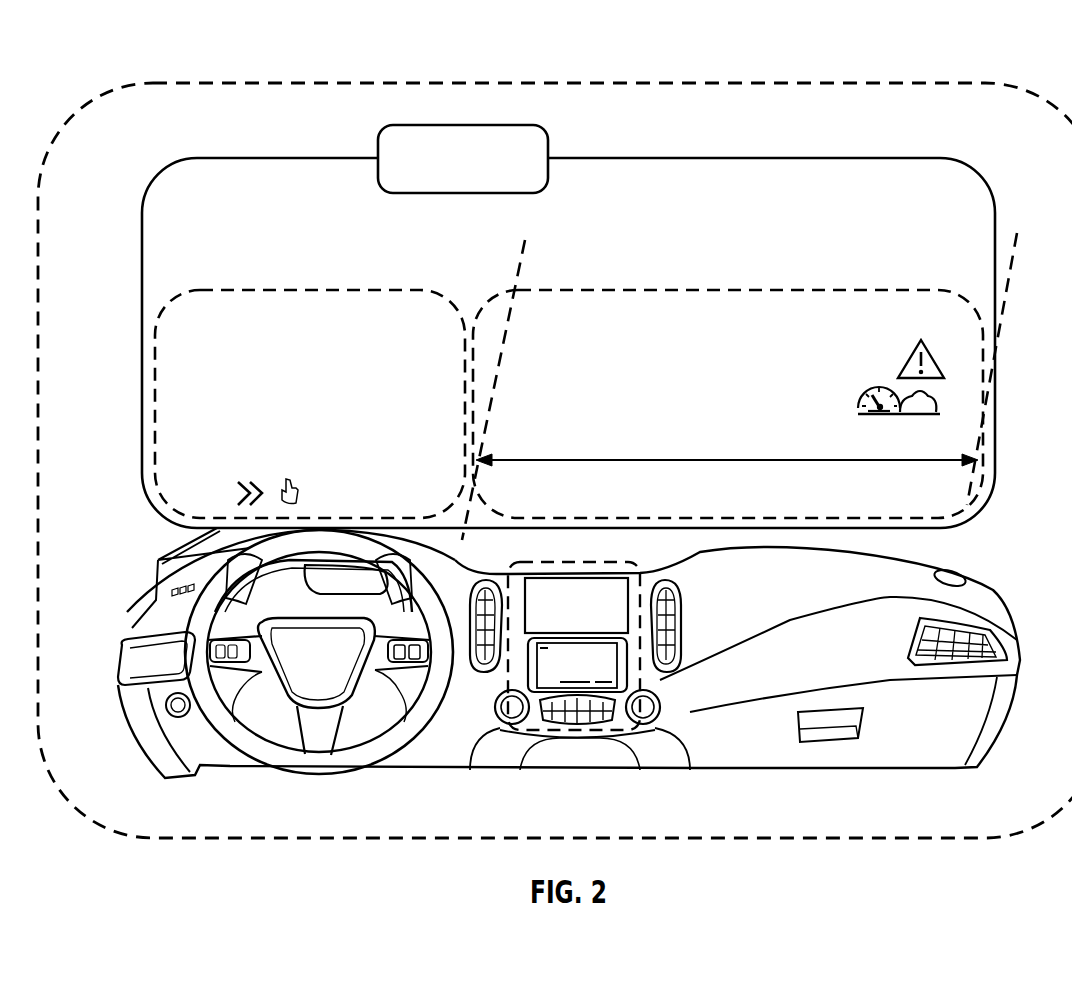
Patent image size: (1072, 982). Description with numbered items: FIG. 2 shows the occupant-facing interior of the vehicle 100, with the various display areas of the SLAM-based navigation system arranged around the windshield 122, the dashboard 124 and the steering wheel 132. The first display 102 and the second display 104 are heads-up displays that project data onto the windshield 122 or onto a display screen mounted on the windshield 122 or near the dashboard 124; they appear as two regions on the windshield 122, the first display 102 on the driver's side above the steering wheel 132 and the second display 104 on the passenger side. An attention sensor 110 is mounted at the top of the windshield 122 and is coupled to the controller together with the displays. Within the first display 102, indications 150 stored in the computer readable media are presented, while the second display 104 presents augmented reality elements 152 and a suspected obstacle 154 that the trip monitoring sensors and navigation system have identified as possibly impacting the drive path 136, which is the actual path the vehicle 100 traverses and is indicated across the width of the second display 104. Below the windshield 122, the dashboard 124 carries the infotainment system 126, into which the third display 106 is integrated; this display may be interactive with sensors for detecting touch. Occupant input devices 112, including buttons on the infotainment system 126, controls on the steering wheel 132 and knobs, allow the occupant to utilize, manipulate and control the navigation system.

The vehicle 100 is at (700, 82).
The steering wheel 132 is at (156, 50).
The windshield 122 is at (268, 157).
The attention sensor 110 is at (453, 124).
The first display 102 is at (268, 289).
The second display 104 is at (623, 289).
The drive path 136 is at (741, 459).
The indications 150 is at (270, 472).
The augmented reality elements 152 is at (872, 388).
The suspected obstacle 154 is at (910, 352).
The dashboard 124 is at (437, 538).
The infotainment system 126 is at (610, 565).
The third display 106 is at (612, 668).
The occupant input devices 112 is at (235, 652).